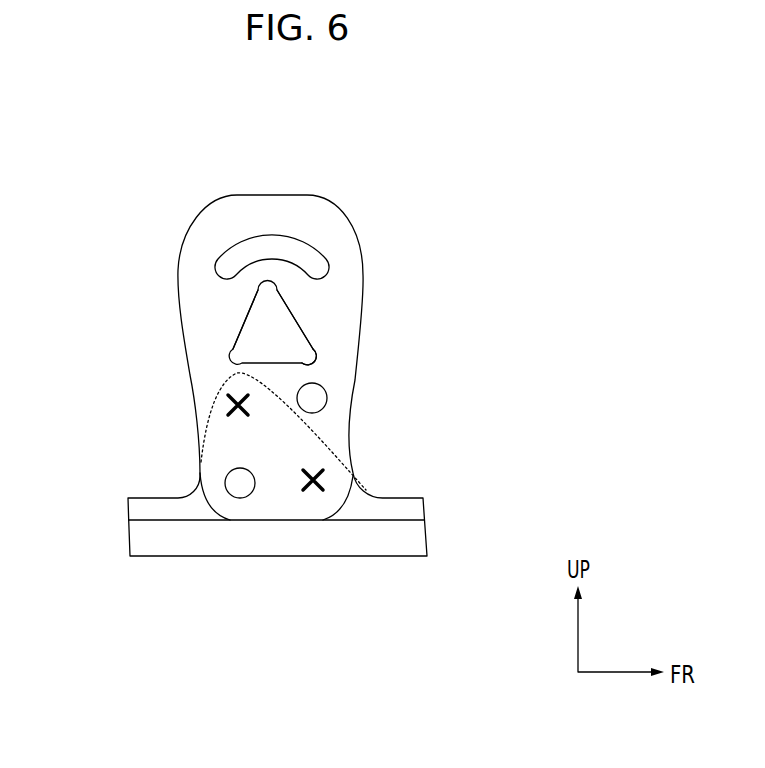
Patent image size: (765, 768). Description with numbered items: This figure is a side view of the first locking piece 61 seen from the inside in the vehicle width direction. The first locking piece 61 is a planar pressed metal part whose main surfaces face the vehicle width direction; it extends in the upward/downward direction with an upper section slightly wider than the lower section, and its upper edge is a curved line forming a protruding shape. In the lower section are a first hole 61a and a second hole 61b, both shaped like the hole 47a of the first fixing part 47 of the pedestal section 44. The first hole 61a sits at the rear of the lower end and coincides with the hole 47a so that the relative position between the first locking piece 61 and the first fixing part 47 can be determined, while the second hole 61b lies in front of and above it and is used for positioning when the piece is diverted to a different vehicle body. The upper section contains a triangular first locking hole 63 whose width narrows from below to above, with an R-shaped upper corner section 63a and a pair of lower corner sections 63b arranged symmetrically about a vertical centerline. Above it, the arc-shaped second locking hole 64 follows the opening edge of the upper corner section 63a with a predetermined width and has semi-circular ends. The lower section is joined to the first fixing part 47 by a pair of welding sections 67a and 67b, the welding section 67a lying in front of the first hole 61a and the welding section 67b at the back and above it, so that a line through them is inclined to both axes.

The pedestal section 44 is at (172, 561).
The first fixing part 47 is at (352, 470).
The hole 47a is at (263, 542).
The first locking piece 61 is at (332, 184).
The first hole 61a is at (237, 497).
The second hole 61b is at (308, 390).
The first locking hole 63 is at (296, 309).
The upper corner section 63a is at (275, 282).
The lower corner sections 63b is at (231, 346).
The second locking hole 64 is at (255, 236).
The welding section 67a is at (322, 480).
The welding section 67b is at (228, 405).